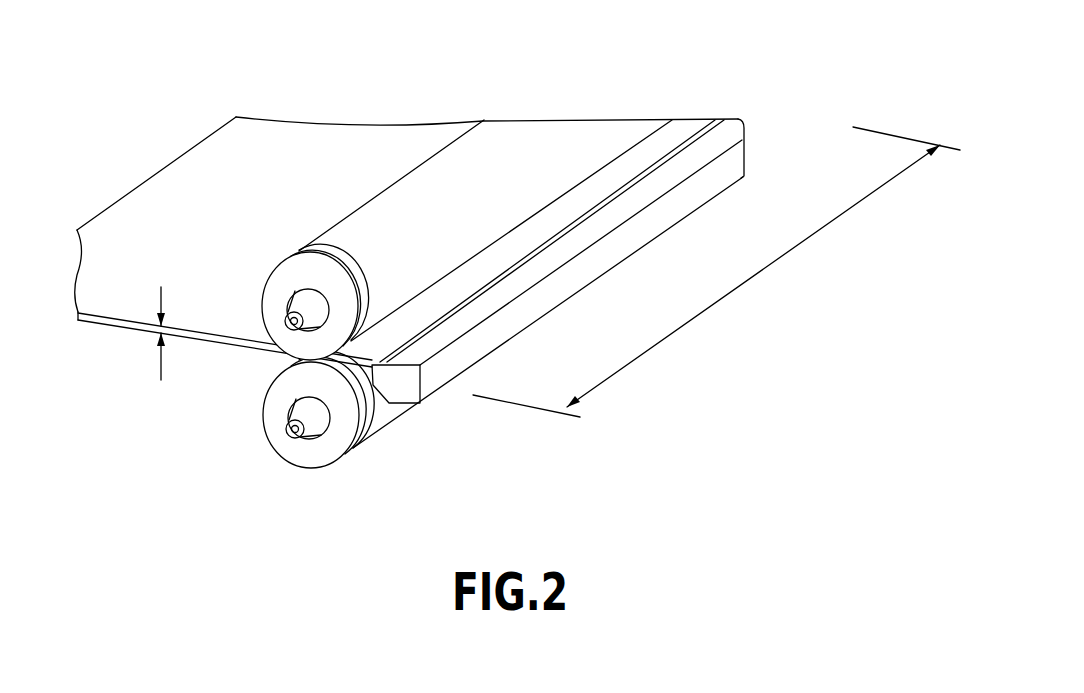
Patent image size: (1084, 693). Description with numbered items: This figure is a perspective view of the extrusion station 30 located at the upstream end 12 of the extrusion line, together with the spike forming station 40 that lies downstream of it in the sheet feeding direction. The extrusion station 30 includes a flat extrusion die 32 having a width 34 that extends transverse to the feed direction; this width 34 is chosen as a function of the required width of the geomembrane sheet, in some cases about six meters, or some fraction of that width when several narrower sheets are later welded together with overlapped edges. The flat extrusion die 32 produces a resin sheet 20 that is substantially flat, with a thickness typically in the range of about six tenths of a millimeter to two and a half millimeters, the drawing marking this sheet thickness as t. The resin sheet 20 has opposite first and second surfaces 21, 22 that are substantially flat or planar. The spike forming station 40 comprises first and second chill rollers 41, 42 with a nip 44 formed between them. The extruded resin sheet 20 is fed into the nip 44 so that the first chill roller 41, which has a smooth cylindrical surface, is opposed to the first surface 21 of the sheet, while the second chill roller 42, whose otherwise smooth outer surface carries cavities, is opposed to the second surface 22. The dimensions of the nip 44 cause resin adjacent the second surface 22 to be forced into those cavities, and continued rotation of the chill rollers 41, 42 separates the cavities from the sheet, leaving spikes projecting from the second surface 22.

The upstream end 12 is at (589, 283).
The resin sheet 20 is at (298, 155).
The first surface 21 is at (391, 150).
The second surface 22 is at (100, 325).
The extrusion station 30 is at (793, 103).
The flat extrusion die 32 is at (681, 140).
The width 34 is at (716, 272).
The spike forming station 40 is at (528, 143).
The first chill roller 41 is at (266, 331).
The second chill roller 42 is at (379, 457).
The nip 44 is at (310, 367).
The film thickness t is at (173, 333).